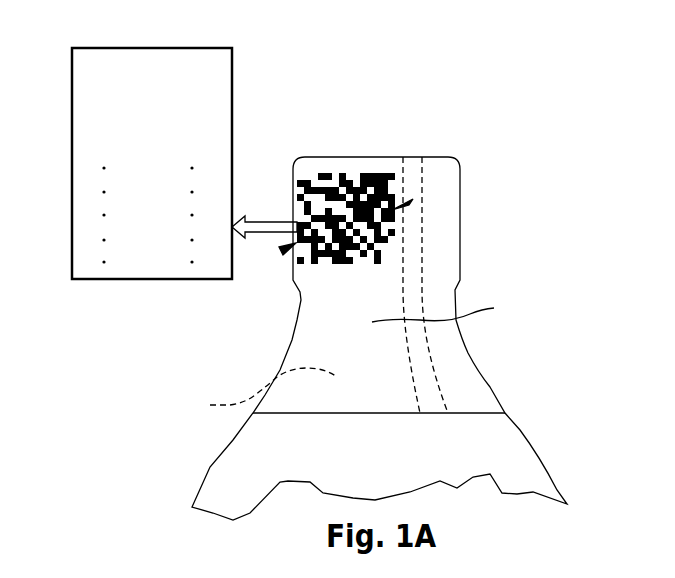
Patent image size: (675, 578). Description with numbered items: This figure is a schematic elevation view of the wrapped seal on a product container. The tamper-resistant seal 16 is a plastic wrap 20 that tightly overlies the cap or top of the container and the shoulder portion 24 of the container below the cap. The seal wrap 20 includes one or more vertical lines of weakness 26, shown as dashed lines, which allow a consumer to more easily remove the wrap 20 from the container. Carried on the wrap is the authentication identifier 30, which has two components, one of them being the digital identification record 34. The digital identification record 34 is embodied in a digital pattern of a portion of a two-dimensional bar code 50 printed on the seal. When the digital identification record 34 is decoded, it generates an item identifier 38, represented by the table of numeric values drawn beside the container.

The tamper-resistant seal 16 is at (276, 330).
The plastic wrap 20 is at (445, 308).
The shoulder portion 24 is at (260, 392).
The vertical lines of weakness 26 is at (407, 358).
The authentication identifier 30 is at (322, 158).
The digital identification record 34 is at (285, 249).
The item identifier 38 is at (105, 279).
The 2D bar code 50 is at (410, 201).